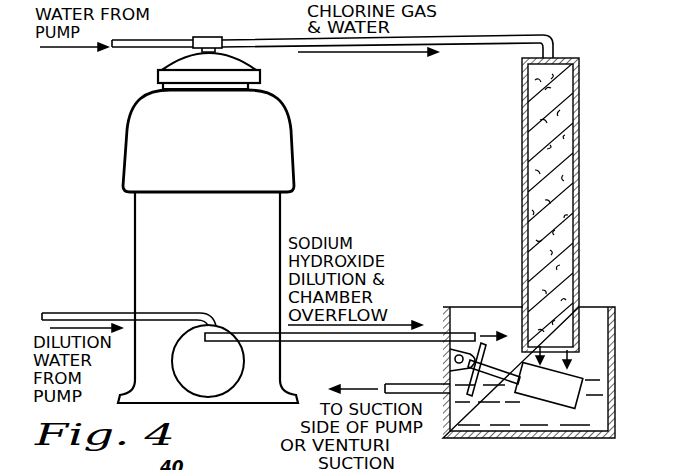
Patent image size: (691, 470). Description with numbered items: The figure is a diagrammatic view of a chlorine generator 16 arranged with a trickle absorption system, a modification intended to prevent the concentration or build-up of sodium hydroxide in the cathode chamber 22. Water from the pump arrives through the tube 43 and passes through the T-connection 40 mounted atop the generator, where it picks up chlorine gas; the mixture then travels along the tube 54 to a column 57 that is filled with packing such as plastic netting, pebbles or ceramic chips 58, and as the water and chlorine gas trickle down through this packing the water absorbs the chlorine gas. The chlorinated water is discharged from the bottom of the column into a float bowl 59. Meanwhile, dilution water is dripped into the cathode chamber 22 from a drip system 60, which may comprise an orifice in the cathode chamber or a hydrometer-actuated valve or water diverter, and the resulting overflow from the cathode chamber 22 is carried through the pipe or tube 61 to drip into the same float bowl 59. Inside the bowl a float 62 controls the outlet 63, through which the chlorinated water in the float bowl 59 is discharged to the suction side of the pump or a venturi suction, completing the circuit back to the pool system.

The chlorine generator 16 is at (291, 122).
The cathode chamber 22 is at (195, 370).
The T-connection 40 is at (218, 37).
The tube 43 is at (166, 38).
The tube 54 is at (258, 38).
The column 57 is at (522, 240).
The ceramic chips 58 is at (572, 62).
The float bowl 59 is at (615, 312).
The drip system 60 is at (90, 312).
The tube 61 is at (312, 346).
The float 62 is at (552, 405).
The outlet 63 is at (405, 383).